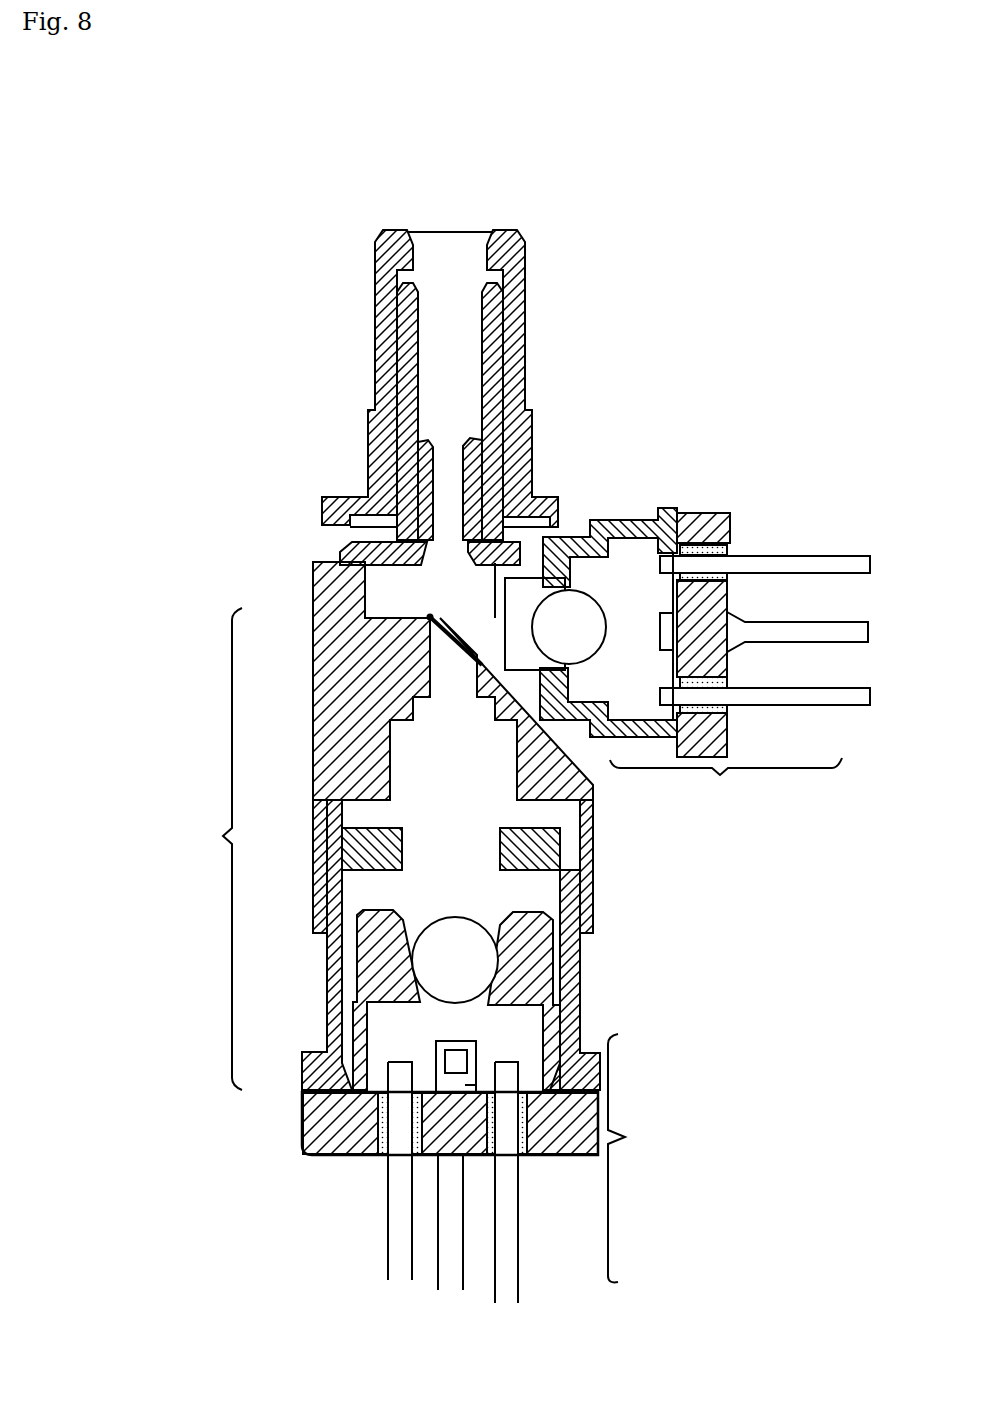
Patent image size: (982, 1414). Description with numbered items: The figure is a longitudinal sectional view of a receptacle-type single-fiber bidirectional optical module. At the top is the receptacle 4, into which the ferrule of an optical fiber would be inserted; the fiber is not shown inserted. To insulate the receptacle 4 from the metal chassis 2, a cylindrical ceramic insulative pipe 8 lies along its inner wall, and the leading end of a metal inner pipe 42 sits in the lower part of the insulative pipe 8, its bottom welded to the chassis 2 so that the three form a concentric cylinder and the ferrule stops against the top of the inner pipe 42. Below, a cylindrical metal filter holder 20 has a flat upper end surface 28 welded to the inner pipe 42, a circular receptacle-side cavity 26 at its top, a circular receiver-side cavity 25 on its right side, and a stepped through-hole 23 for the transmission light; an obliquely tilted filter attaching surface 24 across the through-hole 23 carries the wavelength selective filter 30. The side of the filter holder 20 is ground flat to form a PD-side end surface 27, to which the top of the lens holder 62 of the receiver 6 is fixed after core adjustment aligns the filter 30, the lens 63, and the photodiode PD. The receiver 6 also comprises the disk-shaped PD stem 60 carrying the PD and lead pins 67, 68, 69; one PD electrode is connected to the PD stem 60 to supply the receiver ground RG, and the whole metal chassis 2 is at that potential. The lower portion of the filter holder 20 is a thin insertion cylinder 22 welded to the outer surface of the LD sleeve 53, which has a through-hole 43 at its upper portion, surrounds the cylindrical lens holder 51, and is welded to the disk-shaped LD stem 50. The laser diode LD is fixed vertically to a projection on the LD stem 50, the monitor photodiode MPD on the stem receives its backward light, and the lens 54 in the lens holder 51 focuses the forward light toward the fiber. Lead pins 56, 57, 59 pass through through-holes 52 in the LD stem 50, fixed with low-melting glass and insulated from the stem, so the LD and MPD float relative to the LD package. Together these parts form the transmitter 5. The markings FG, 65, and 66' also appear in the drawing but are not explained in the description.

The receptacle 4 is at (390, 333).
The ferrule guide FG is at (366, 366).
The insulative pipe 8 is at (410, 417).
The inner pipe 42 is at (350, 548).
The upper end surface 28 is at (347, 557).
The filter holder 20 is at (340, 779).
The receptacle-side cavity 26 is at (428, 590).
The wavelength selective filter 30 is at (427, 645).
The stepped through-hole 23 is at (423, 715).
The filter attaching surface 24 is at (507, 713).
The insertion cylinder 22 is at (313, 880).
The through-hole 43 is at (402, 853).
The receiver ground RG is at (304, 707).
The chassis 2 is at (217, 849).
The lens holder 62 is at (608, 641).
The PD-side end surface 27 is at (617, 653).
The photodiode PD is at (649, 643).
The receiver-side cavity 25 is at (519, 632).
The lens 63 is at (569, 627).
The PD stem 60 is at (713, 745).
The insulating ring 66' is at (739, 601).
The washer 65 is at (730, 578).
The lead pin 69 is at (832, 556).
The lead pin 68 is at (821, 632).
The lead pin 67 is at (840, 696).
The receiver 6 is at (729, 785).
The LD sleeve 53 is at (333, 972).
The lens holder 51 is at (362, 1017).
The lens 54 is at (472, 940).
The laser diode LD is at (455, 1058).
The monitor photodiode MPD is at (472, 1092).
The LD stem 50 is at (362, 1157).
The through-holes 52 is at (383, 1157).
The lead pin 56 is at (398, 1260).
The lead pin 59 is at (450, 1260).
The lead pin 57 is at (503, 1270).
The transmitter 5 is at (631, 1131).